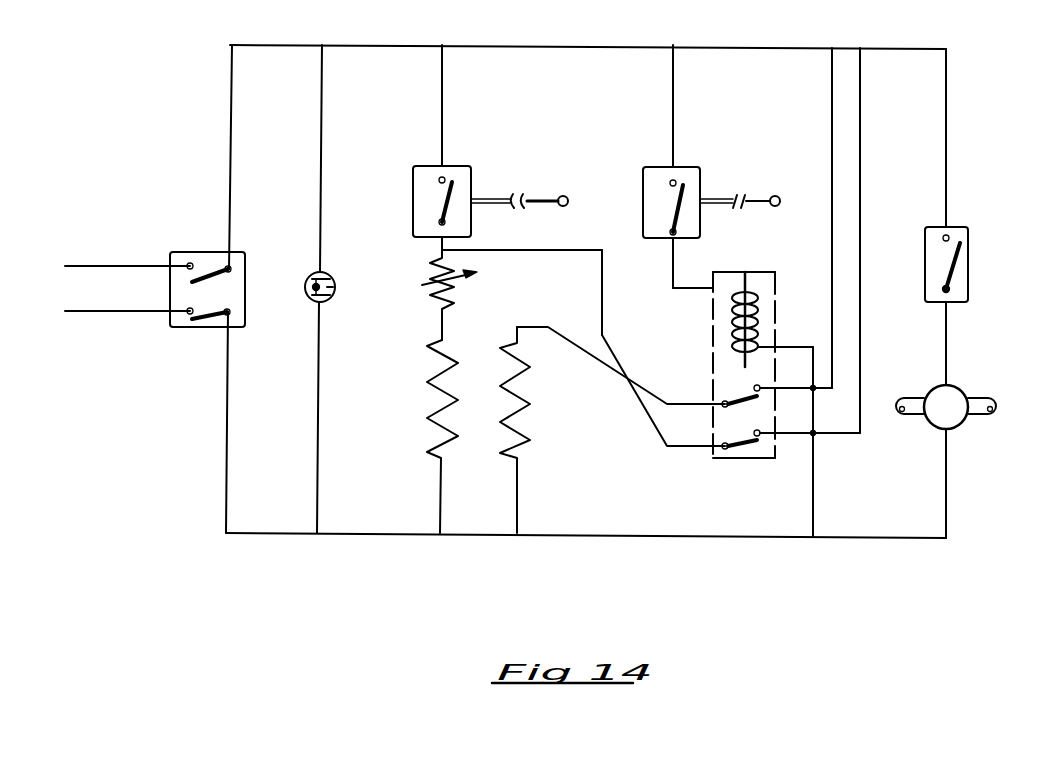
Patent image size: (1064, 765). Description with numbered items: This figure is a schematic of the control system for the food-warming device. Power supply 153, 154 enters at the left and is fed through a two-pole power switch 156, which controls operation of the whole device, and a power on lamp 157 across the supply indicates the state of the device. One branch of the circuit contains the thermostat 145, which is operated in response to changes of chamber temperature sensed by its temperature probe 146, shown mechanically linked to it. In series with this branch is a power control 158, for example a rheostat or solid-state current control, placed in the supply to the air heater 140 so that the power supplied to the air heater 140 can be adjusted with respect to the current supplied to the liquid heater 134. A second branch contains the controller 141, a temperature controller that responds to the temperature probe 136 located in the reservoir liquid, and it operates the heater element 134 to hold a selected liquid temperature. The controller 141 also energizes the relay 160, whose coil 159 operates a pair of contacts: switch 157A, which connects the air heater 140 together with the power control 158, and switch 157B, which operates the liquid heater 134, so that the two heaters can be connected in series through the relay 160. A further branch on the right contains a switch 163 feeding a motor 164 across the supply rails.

The heater element 134 is at (522, 395).
The temperature probe 136 is at (758, 195).
The second heater 140 is at (435, 383).
The controller 141 is at (693, 192).
The thermostat 145 is at (465, 189).
The temperature probe 146 is at (535, 197).
The power supply 153 is at (117, 265).
The power supply 154 is at (128, 314).
The power switch 156 is at (245, 265).
The power on lamp 157 is at (335, 280).
The switch 157A is at (735, 402).
The switch 157B is at (748, 447).
The power control 158 is at (455, 296).
The coil 159 is at (757, 332).
The relay 160 is at (775, 283).
The motor switch 163 is at (958, 280).
The motor 164 is at (947, 402).